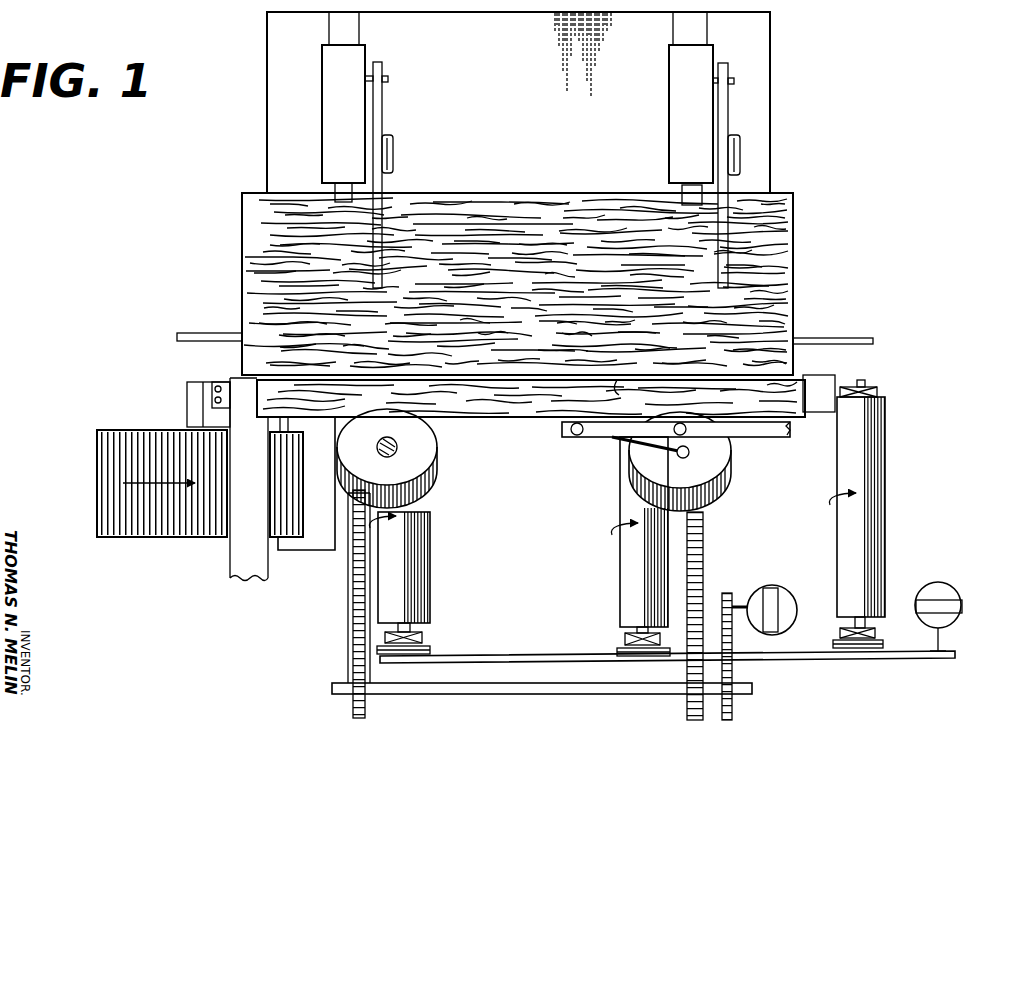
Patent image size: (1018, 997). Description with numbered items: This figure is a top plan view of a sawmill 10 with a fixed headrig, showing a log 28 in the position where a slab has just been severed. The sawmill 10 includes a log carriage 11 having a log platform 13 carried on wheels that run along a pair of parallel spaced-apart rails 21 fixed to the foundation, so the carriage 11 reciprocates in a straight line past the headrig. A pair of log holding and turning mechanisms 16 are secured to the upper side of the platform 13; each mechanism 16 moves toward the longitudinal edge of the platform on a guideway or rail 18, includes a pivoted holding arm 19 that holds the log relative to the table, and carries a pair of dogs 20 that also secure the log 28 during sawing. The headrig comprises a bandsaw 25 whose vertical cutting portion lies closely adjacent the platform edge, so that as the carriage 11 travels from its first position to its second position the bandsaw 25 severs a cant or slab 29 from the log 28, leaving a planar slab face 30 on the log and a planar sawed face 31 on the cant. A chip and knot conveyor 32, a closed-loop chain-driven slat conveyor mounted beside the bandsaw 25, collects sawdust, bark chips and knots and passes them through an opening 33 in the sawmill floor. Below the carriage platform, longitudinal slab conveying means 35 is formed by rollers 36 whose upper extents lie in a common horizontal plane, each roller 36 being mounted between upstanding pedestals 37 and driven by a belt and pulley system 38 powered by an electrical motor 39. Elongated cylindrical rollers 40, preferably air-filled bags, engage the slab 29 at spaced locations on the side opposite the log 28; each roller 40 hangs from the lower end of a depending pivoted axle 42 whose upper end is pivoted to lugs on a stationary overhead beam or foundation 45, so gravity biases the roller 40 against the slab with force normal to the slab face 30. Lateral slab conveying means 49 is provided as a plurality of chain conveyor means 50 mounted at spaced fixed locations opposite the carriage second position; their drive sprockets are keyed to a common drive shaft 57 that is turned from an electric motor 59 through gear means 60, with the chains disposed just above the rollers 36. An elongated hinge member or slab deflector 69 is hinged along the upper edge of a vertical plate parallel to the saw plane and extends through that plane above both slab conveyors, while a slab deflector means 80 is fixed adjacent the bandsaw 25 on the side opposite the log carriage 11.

The sawmill 10 is at (182, 290).
The log carriage 11 is at (773, 97).
The log platform 13 is at (544, 104).
The log holding and turning mechanism 16 is at (345, 93).
The guideway or rail 18 is at (343, 33).
The pivoted holding arm 19 is at (385, 183).
The dogs 20 is at (335, 190).
The rails 21 is at (830, 340).
The bandsaw 25 is at (247, 565).
The log 28 is at (502, 220).
The cant or slab 29 is at (535, 392).
The slab face 30 is at (587, 385).
The sawed face 31 is at (630, 393).
The chip and knot conveyor 32 is at (172, 517).
The opening 33 is at (318, 545).
The longitudinal slab conveying means 35 is at (407, 600).
The rollers 36 is at (425, 565).
The pedestals 37 is at (420, 636).
The belt and pulley system 38 is at (432, 650).
The electrical motor 39 is at (940, 590).
The elongated cylindrical rollers 40 is at (437, 470).
The depending pivoted axle 42 is at (652, 464).
The stationary overhead beam or foundation 45 is at (775, 435).
The lateral slab conveying means 49 is at (702, 567).
The chain conveyor means 50 is at (350, 645).
The drive shaft 57 is at (555, 690).
The electric motor 59 is at (773, 590).
The gear means 60 is at (740, 655).
The hinge member or slab deflector 69 is at (821, 392).
The slab deflector means 80 is at (208, 397).